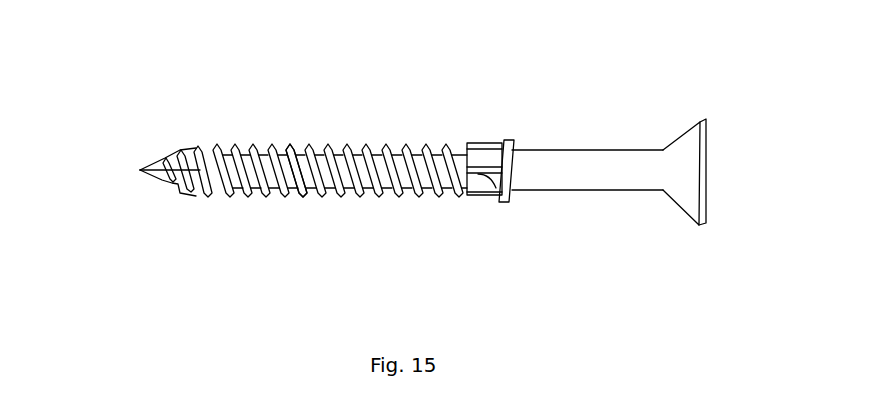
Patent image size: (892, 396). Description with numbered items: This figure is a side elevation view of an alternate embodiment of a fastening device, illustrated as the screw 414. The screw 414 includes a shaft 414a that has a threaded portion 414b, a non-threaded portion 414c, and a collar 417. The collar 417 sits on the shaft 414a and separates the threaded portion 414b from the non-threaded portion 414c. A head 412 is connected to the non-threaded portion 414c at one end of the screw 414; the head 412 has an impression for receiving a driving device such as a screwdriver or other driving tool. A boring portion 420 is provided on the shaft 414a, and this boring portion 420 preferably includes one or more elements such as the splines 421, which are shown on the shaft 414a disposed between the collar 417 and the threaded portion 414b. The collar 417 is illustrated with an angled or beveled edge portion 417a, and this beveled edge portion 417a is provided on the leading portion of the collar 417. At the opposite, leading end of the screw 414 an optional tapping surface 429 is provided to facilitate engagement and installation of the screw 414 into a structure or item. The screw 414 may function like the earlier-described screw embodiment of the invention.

The head 412 is at (688, 124).
The screw 414 is at (597, 207).
The shaft 414a is at (660, 138).
The threaded portion 414b is at (268, 195).
The non-threaded portion 414c is at (637, 190).
The collar 417 is at (518, 196).
The beveled edge portion 417a is at (503, 142).
The boring portion 420 is at (500, 202).
The splines 421 is at (478, 143).
The tapping surface 429 is at (207, 178).